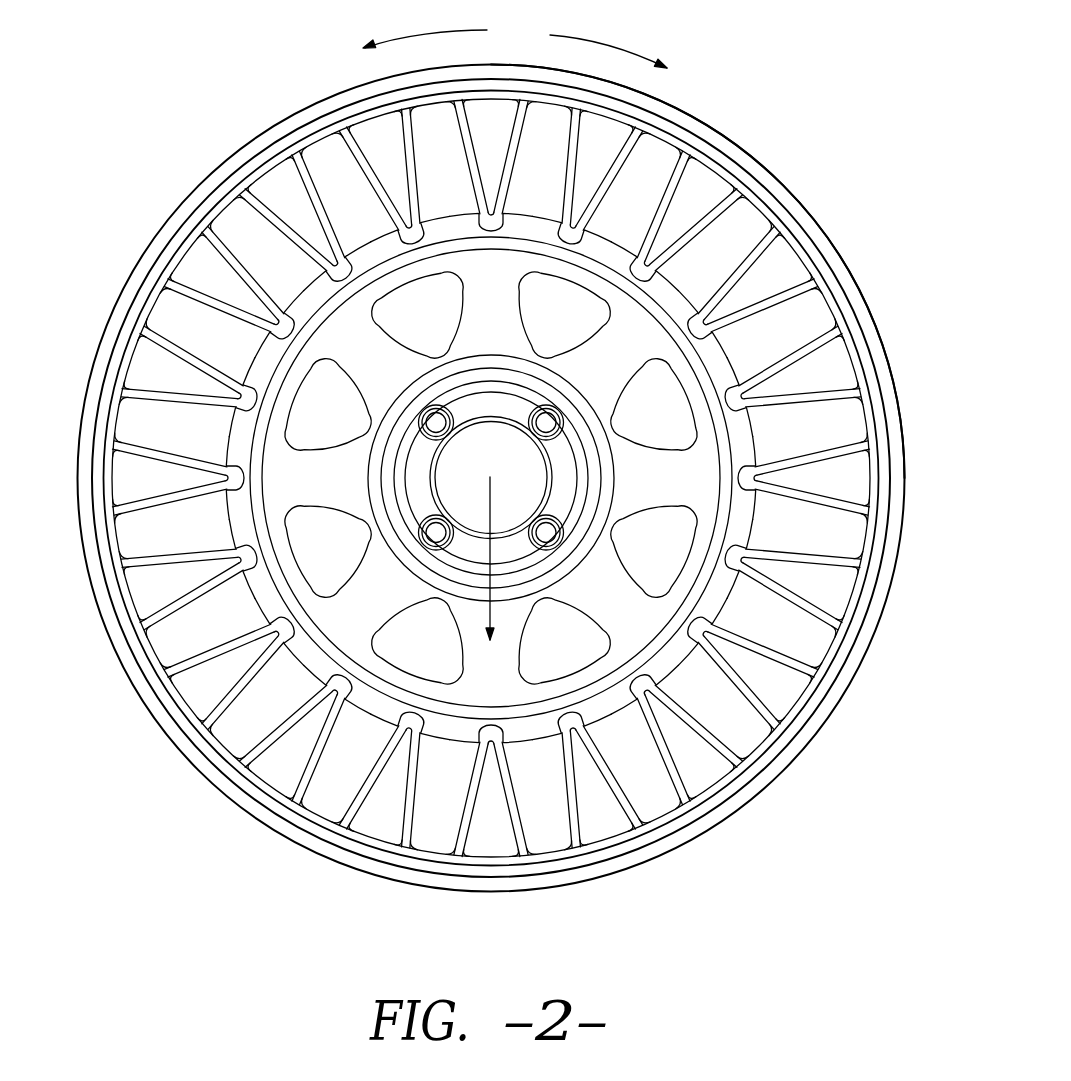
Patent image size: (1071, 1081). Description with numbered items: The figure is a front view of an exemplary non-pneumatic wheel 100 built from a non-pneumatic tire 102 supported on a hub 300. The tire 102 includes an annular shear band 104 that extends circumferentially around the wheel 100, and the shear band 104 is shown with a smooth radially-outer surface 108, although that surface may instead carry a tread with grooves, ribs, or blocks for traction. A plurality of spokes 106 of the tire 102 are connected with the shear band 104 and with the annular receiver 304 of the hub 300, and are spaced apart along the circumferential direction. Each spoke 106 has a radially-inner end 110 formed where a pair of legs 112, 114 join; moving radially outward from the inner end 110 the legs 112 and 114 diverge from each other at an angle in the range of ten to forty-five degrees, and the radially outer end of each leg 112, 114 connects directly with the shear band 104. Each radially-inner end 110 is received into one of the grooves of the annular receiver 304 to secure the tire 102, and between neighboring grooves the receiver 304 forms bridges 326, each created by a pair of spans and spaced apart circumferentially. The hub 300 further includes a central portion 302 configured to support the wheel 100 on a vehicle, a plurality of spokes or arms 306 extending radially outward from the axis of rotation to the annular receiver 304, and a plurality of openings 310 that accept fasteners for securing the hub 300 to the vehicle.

The non-pneumatic wheel 100 is at (472, 476).
The non-pneumatic tire 102 is at (133, 420).
The annular shear band 104 is at (305, 837).
The spoke 106 is at (480, 519).
The radially-outer surface 108 is at (729, 138).
The radially-inner end 110 is at (338, 268).
The leg 112 is at (236, 184).
The leg 114 is at (195, 654).
The hub 300 is at (563, 317).
The central portion 302 is at (318, 480).
The annular receiver 304 is at (598, 742).
The spokes or arms 306 is at (608, 362).
The opening 310 is at (437, 422).
The bridge 326 is at (444, 206).